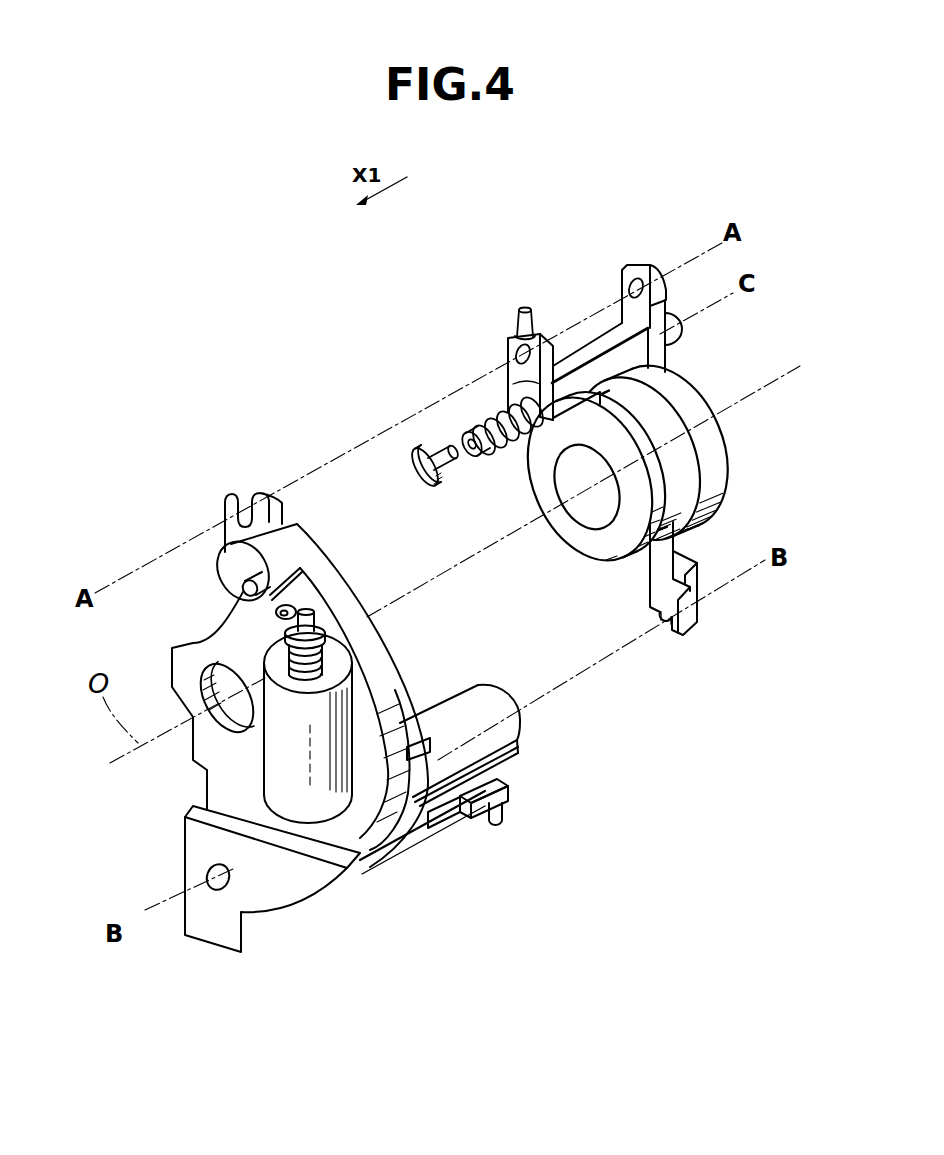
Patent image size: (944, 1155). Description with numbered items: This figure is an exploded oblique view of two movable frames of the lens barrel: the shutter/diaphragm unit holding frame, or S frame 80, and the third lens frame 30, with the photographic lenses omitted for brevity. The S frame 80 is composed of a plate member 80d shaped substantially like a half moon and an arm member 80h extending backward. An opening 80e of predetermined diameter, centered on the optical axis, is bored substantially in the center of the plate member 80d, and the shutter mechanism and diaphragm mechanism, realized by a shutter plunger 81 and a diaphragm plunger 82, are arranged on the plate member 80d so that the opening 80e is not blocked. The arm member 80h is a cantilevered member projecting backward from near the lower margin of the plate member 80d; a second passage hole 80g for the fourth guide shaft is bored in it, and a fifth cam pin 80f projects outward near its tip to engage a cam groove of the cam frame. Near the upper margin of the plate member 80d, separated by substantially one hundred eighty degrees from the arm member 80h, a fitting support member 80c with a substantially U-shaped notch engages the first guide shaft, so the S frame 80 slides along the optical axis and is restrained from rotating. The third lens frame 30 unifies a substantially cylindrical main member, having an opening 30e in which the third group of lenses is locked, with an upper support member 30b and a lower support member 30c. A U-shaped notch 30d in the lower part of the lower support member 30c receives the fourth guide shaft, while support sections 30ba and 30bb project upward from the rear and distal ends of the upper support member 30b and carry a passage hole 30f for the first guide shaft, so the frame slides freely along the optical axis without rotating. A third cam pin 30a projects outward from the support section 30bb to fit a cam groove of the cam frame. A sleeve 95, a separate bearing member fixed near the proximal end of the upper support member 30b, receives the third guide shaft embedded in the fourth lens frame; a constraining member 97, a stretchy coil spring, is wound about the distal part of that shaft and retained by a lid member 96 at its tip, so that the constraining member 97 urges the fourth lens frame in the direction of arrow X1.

The third lens frame 30 is at (500, 296).
The third cam pin 30a is at (526, 338).
The upper support member 30b is at (680, 384).
The support section 30ba is at (640, 270).
The support section 30bb is at (507, 348).
The lower support member 30c is at (696, 612).
The U-shaped notch 30d is at (665, 622).
The opening 30e is at (594, 520).
The passage hole 30f is at (633, 283).
The shutter/diaphragm unit holding frame 80 is at (196, 521).
The fitting support member 80c is at (230, 496).
The plate member 80d is at (347, 840).
The opening 80e is at (232, 720).
The fifth cam pin 80f is at (504, 818).
The second passage hole 80g is at (214, 892).
The arm member 80h is at (433, 787).
The shutter plunger 81 is at (423, 775).
The diaphragm plunger 82 is at (516, 720).
The sleeve 95 is at (500, 452).
The lid member 96 is at (423, 482).
The constraining member 97 is at (478, 413).